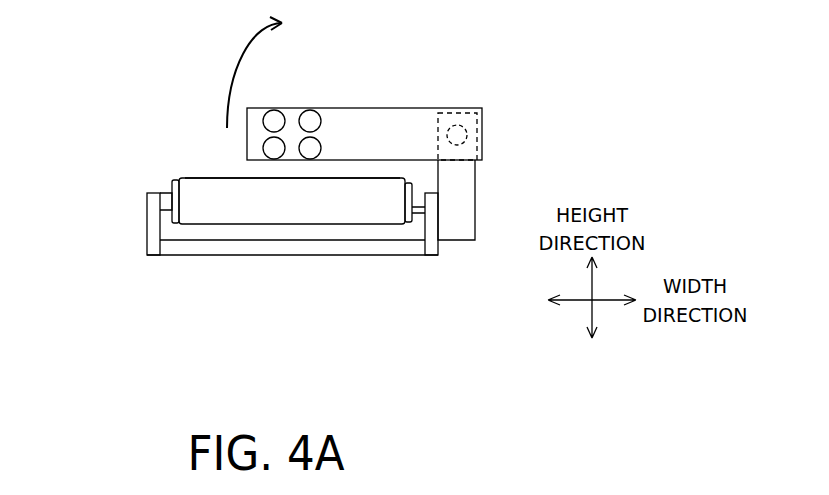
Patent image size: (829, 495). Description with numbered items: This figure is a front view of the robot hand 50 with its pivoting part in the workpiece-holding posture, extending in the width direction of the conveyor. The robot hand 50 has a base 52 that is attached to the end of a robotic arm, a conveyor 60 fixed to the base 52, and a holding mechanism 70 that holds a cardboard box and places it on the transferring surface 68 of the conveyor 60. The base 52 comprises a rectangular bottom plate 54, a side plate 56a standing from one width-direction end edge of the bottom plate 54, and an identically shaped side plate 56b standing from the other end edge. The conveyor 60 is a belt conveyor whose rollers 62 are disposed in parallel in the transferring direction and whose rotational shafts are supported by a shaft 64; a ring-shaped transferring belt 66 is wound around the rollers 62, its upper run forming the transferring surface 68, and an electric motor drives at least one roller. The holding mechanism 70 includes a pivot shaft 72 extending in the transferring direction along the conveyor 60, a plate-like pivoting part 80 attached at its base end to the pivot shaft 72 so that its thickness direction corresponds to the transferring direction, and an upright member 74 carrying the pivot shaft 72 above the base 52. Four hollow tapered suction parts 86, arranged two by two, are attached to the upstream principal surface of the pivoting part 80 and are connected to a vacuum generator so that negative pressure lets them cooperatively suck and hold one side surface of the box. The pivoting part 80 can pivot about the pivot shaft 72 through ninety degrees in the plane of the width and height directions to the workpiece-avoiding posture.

The robot hand 50 is at (84, 51).
The base 52 is at (146, 210).
The bottom plate 54 is at (330, 256).
The side plate 56a is at (146, 247).
The side plate 56b is at (440, 248).
The conveyor 60 is at (188, 178).
The rollers 62 is at (173, 223).
The shaft 64 is at (168, 190).
The transferring belt 66 is at (237, 201).
The transferring surface 68 is at (213, 177).
The holding mechanism 70 is at (392, 165).
The pivot shaft 72 is at (483, 133).
The support column 74 is at (477, 182).
The pivoting part 80 is at (383, 107).
The suction parts 86 is at (293, 111).